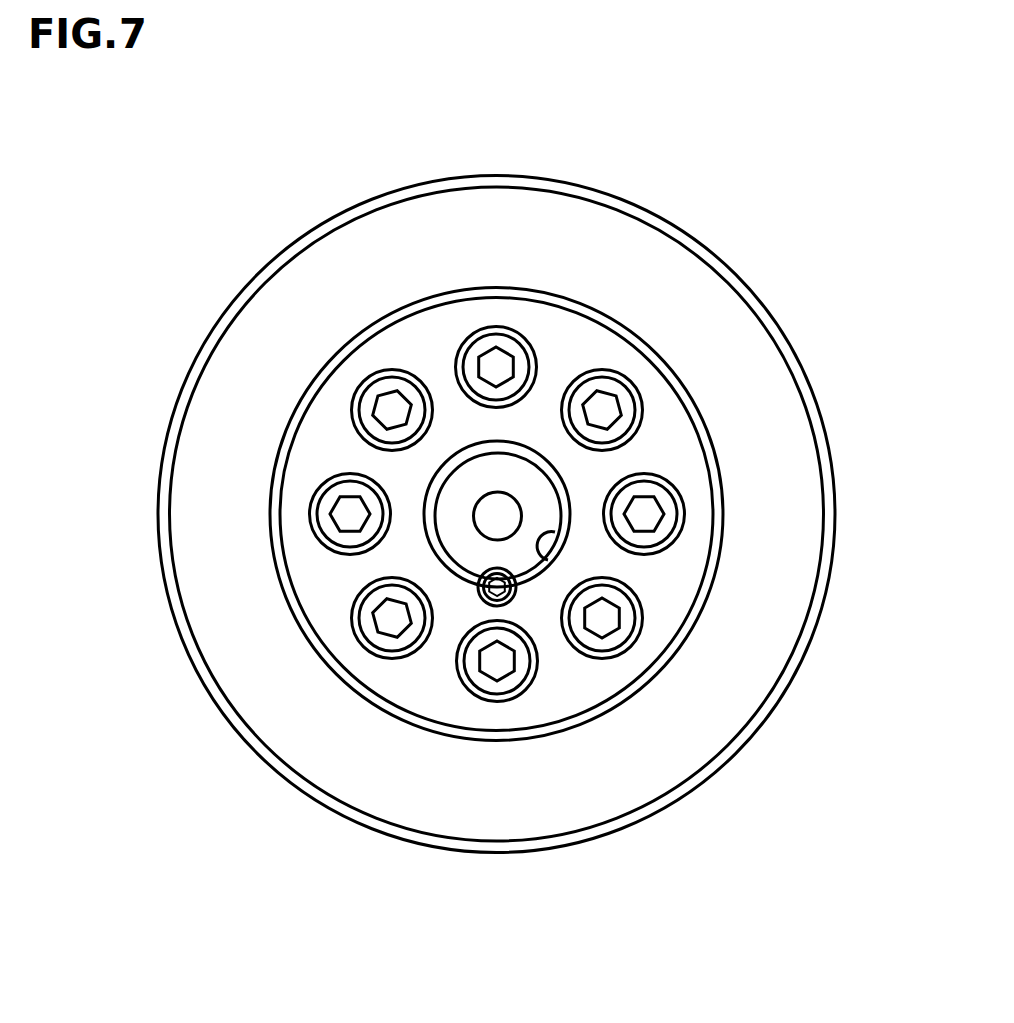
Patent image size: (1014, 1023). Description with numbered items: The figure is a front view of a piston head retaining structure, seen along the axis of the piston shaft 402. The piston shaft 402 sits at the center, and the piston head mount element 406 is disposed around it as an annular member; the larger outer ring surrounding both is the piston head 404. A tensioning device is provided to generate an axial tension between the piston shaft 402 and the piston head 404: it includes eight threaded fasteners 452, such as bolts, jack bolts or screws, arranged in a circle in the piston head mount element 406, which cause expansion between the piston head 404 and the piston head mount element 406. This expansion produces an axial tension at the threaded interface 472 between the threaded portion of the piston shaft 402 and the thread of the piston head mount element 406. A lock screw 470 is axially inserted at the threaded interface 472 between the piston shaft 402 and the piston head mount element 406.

The piston shaft 402 is at (522, 480).
The piston head 404 is at (648, 253).
The piston head mount element 406 is at (662, 420).
The threaded fasteners 452 is at (495, 365).
The lock screw 470 is at (493, 588).
The threaded interface 472 is at (556, 533).